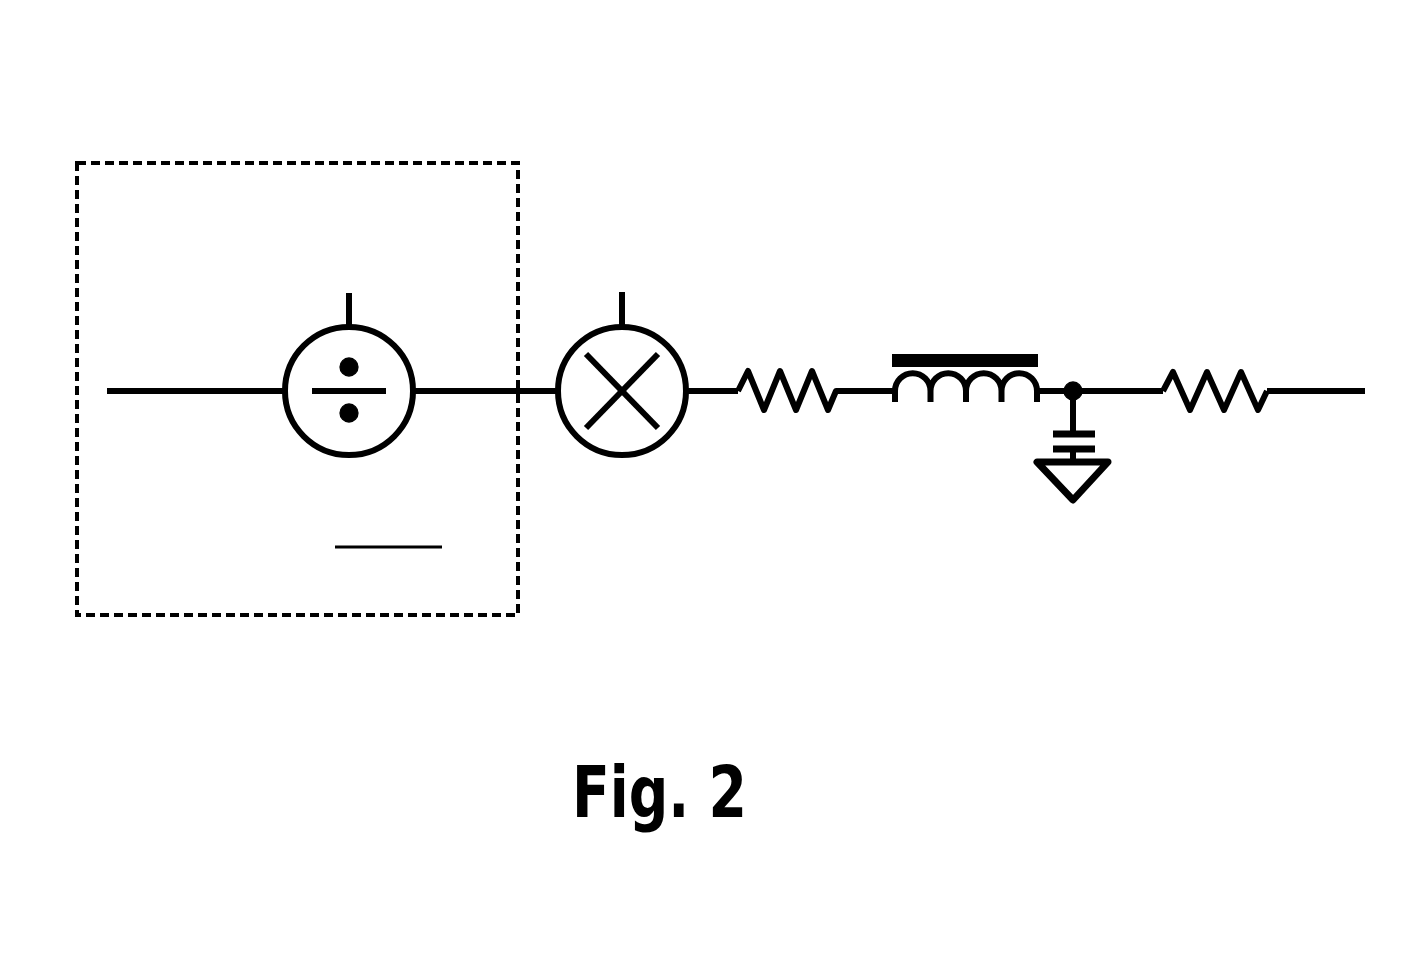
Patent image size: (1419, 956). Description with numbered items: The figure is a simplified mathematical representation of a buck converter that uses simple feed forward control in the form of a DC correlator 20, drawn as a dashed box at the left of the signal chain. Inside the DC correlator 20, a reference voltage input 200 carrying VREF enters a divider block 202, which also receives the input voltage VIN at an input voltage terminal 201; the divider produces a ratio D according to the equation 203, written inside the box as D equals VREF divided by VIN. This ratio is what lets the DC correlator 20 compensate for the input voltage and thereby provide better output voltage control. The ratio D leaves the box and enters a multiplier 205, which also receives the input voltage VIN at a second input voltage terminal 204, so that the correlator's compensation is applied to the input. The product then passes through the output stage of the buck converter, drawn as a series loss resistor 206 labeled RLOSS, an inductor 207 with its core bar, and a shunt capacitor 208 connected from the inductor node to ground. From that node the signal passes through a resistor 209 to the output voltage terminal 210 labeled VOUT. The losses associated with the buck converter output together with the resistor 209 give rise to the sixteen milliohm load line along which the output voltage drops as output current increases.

The DC correlator 20 is at (203, 130).
The reference voltage input VREF 200 is at (189, 359).
The input voltage VIN to divider 201 is at (380, 281).
The divider 202 is at (420, 391).
The equation 203 is at (376, 550).
The input voltage VIN to mixer 204 is at (640, 281).
The mixer/multiplier 205 is at (648, 407).
The loss resistor RLOSS 206 is at (813, 378).
The inductor 207 is at (1027, 399).
The capacitor to ground 208 is at (1103, 441).
The resistor 209 is at (1215, 376).
The output voltage VOUT 210 is at (1337, 364).